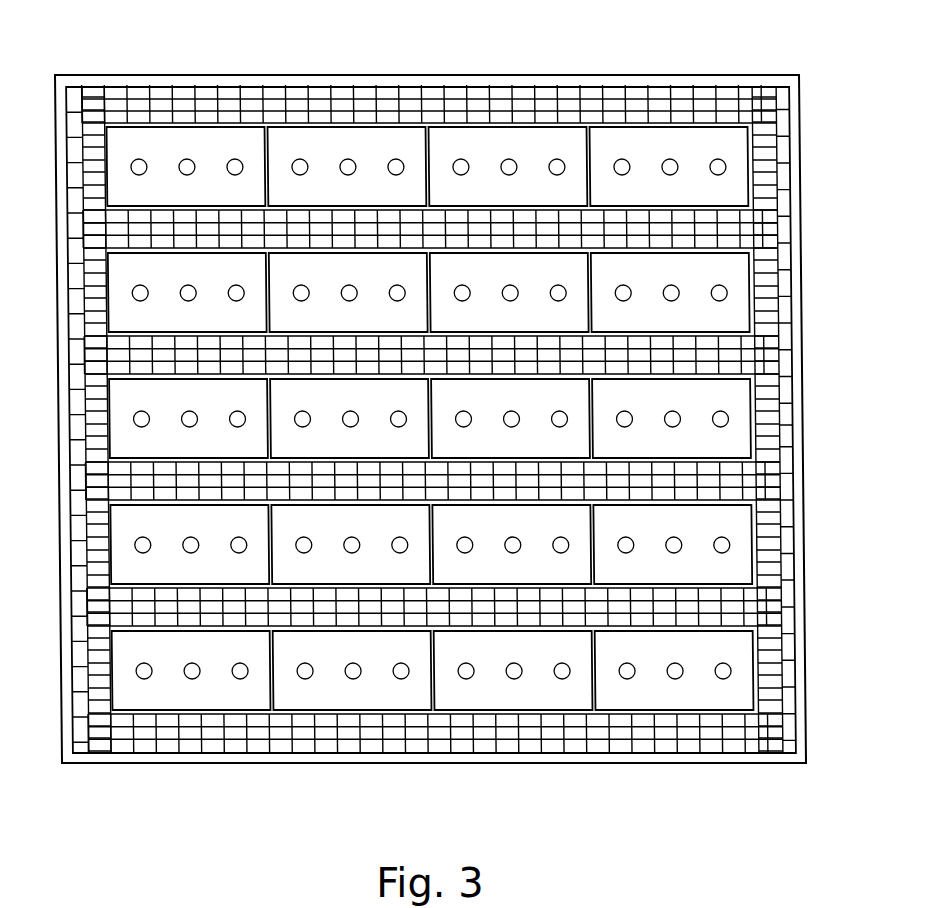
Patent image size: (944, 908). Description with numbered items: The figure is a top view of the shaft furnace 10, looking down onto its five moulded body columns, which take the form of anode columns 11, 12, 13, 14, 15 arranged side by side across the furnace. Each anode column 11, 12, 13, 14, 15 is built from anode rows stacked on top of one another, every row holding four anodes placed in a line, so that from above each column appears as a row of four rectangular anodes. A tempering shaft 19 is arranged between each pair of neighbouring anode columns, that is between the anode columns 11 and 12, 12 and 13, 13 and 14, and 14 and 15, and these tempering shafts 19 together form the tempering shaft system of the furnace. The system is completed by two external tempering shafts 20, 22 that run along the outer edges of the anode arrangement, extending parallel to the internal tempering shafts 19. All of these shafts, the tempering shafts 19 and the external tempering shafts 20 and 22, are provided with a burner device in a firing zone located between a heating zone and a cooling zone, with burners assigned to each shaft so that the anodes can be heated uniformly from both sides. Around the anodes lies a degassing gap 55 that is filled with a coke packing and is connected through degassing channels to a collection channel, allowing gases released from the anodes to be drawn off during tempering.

The shaft furnace 10 is at (368, 784).
The anode column 11 is at (723, 150).
The anode column 12 is at (724, 276).
The anode column 13 is at (725, 402).
The anode column 14 is at (728, 525).
The anode column 15 is at (728, 652).
The tempering shaft 19 is at (735, 235).
The external tempering shaft 20 is at (464, 747).
The external tempering shaft 22 is at (425, 110).
The degassing gap 55 is at (646, 708).